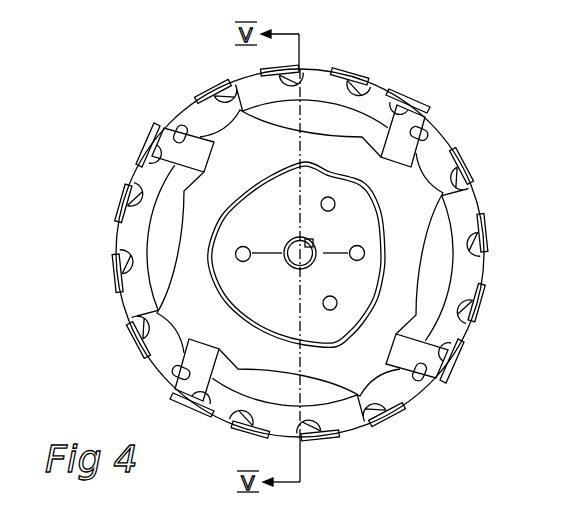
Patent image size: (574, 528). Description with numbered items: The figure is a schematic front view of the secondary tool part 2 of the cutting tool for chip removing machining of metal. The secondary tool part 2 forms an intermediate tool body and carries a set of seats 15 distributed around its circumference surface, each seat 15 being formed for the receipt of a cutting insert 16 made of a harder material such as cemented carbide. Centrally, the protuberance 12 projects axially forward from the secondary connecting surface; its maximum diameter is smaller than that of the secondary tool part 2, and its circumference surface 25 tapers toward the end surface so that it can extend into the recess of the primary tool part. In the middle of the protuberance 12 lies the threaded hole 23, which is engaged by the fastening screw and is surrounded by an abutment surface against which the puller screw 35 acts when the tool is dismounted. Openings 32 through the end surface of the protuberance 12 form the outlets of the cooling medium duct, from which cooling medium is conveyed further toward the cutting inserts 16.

The secondary tool part 2 is at (95, 172).
The protuberance 12 is at (357, 184).
The seats 15 is at (180, 128).
The cutting insert 16 is at (160, 131).
The threaded hole 23 is at (296, 261).
The circumference surface 25 is at (225, 302).
The openings 32 is at (322, 203).
The puller screw 35 is at (312, 243).